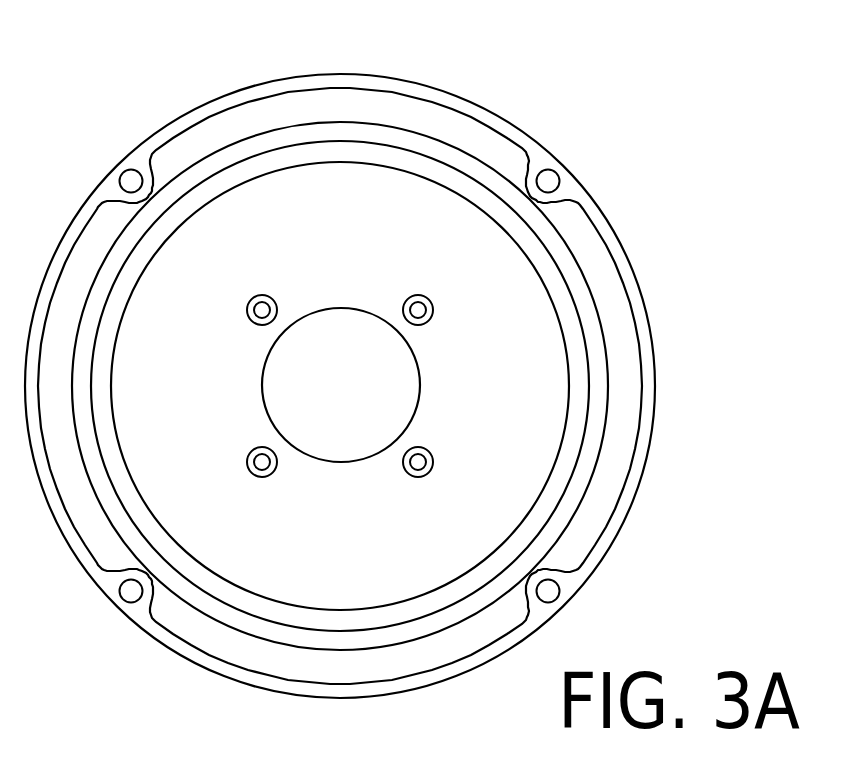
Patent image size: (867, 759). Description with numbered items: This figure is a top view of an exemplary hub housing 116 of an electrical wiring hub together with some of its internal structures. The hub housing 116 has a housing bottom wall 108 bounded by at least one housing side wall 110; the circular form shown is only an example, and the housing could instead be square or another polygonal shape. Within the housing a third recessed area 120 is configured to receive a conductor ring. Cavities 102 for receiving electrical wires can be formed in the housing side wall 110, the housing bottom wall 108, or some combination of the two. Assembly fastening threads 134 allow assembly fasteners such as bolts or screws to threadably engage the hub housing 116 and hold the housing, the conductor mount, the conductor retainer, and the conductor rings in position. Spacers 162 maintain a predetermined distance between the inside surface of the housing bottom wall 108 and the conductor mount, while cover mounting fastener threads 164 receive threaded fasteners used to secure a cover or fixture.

The cavities 102 is at (332, 429).
The housing bottom wall 108 is at (517, 363).
The housing side wall 110 is at (580, 202).
The hub housing 116 is at (423, 82).
The third recessed area 120 is at (567, 450).
The assembly fastening threads 134 is at (414, 465).
The spacers 162 is at (257, 447).
The cover mounting fastener threads 164 is at (108, 174).